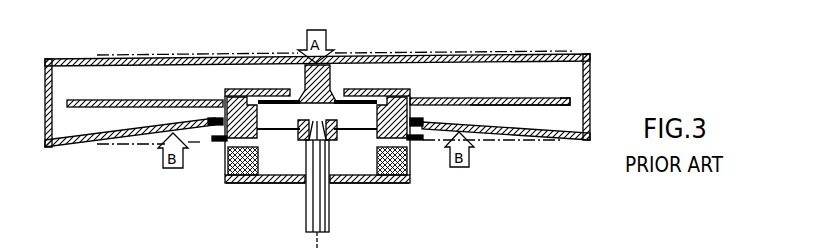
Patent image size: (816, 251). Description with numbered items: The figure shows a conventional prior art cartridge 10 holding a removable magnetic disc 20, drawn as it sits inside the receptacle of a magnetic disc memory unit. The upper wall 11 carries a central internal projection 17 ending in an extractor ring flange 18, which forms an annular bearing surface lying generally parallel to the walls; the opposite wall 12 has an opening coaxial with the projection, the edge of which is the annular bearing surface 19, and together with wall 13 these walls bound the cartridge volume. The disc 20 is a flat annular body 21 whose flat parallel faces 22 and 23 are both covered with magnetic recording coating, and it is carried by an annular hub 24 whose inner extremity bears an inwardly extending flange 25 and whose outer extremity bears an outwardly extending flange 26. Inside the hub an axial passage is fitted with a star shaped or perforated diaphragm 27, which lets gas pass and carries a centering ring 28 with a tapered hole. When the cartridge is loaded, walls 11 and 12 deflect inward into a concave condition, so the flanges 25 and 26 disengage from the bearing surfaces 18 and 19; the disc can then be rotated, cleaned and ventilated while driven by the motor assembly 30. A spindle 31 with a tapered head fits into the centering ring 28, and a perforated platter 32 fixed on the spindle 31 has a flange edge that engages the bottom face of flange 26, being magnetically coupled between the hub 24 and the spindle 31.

The cartridge 10 is at (88, 152).
The upper wall 11 is at (158, 67).
The wall 12 is at (75, 121).
The wall 13 is at (53, 92).
The internal projection 17 is at (197, 85).
The extractor ring flange 18 is at (263, 102).
The annular bearing surface 19 is at (210, 119).
The disc 20 is at (462, 93).
The flat annular body 21 is at (578, 101).
The face 22 is at (478, 97).
The face 23 is at (518, 107).
The annular hub 24 is at (378, 120).
The inwardly extending flange 25 is at (455, 83).
The outwardly extending flange 26 is at (416, 139).
The diaphragm 27 is at (278, 131).
The centering ring 28 is at (335, 131).
The motor assembly 30 is at (270, 195).
The spindle 31 is at (329, 186).
The platter 32 is at (397, 183).